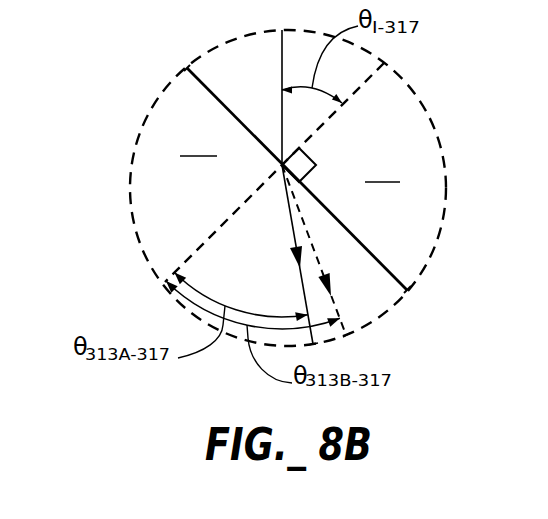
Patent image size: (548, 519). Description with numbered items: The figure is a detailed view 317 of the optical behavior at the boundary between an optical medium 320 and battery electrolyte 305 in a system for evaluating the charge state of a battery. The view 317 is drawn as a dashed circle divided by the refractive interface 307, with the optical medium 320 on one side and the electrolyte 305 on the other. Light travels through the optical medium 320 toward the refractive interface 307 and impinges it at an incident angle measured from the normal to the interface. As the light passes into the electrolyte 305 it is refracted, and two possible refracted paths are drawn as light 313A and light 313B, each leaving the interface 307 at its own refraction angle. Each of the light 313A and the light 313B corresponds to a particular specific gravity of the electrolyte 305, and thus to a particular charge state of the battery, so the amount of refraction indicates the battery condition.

The electrolyte 305 is at (150, 156).
The refractive interface 307 is at (212, 94).
The refracted light 313A is at (292, 231).
The refracted light 313B is at (316, 248).
The detailed view 317 is at (130, 222).
The optical medium 320 is at (382, 170).